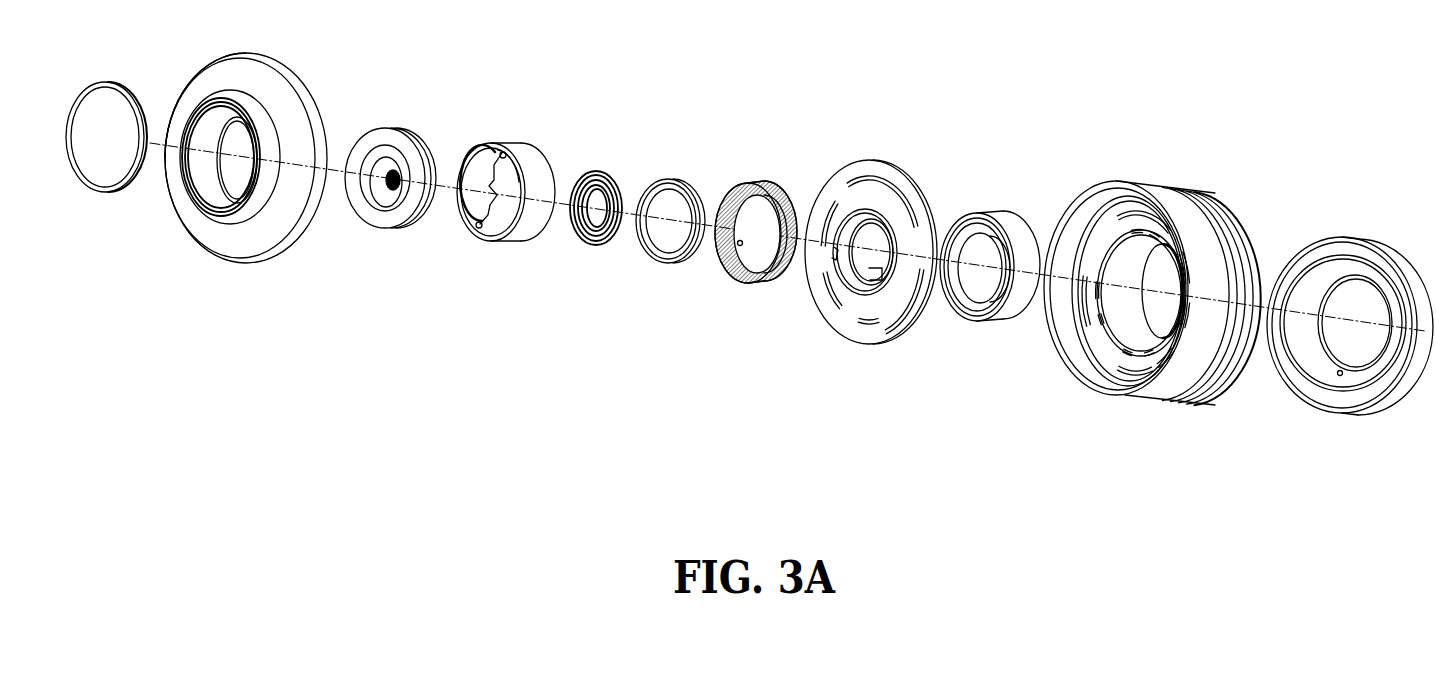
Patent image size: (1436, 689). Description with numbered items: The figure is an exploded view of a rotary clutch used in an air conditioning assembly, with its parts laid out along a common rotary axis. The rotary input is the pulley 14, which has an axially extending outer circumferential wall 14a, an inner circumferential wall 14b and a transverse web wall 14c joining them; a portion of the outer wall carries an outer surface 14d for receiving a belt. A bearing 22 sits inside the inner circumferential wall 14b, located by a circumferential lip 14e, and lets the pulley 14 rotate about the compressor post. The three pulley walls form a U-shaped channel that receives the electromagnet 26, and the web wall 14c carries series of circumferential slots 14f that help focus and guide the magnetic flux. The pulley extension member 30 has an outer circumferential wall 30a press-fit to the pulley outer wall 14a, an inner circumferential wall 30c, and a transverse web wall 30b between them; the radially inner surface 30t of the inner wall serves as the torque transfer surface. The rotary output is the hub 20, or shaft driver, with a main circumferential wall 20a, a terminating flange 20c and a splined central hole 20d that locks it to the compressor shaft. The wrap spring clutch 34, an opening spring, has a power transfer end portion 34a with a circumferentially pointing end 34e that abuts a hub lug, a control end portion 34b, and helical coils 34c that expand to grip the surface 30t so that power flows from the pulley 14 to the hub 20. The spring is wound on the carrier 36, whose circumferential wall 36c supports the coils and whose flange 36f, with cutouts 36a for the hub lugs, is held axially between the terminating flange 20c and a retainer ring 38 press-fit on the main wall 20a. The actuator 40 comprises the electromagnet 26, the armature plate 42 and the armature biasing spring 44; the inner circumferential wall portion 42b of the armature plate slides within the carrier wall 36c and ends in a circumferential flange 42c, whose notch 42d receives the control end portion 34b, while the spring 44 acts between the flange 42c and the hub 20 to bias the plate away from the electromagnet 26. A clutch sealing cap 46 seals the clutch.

The pulley 14 is at (1125, 280).
The outer circumferential wall 14a is at (1087, 226).
The inner circumferential wall 14b is at (1127, 313).
The web wall 14c is at (1118, 373).
The outer surface 14d is at (1233, 230).
The circumferential lip 14e is at (1140, 300).
The circumferential slots 14f is at (1125, 352).
The hub 20 is at (383, 171).
The main circumferential wall 20a is at (372, 200).
The terminating flange 20c is at (398, 147).
The central hole 20d is at (389, 191).
The bearing 22 is at (980, 214).
The electromagnet 26 is at (1338, 238).
The pulley extension member 30 is at (320, 158).
The outer circumferential wall 30a is at (286, 233).
The transverse web wall 30b is at (260, 82).
The inner circumferential wall 30c is at (262, 128).
The radially inner surface 30t is at (210, 132).
The wrap spring clutch 34 is at (740, 236).
The power transfer end portion 34a is at (751, 190).
The control end portion 34b is at (727, 258).
The helical coils 34c is at (787, 281).
The circumferentially pointing end 34e is at (780, 197).
The carrier 36 is at (497, 184).
The cutouts 36a is at (478, 226).
The circumferential wall 36c is at (530, 148).
The flange 36f is at (522, 227).
The retainer ring 38 is at (664, 181).
The actuator 40 is at (610, 165).
The armature plate 42 is at (873, 250).
The inner circumferential wall portion 42b is at (893, 200).
The circumferential flange 42c is at (842, 286).
The notch 42d is at (883, 262).
The armature biasing spring 44 is at (593, 173).
The clutch sealing cap 46 is at (101, 82).